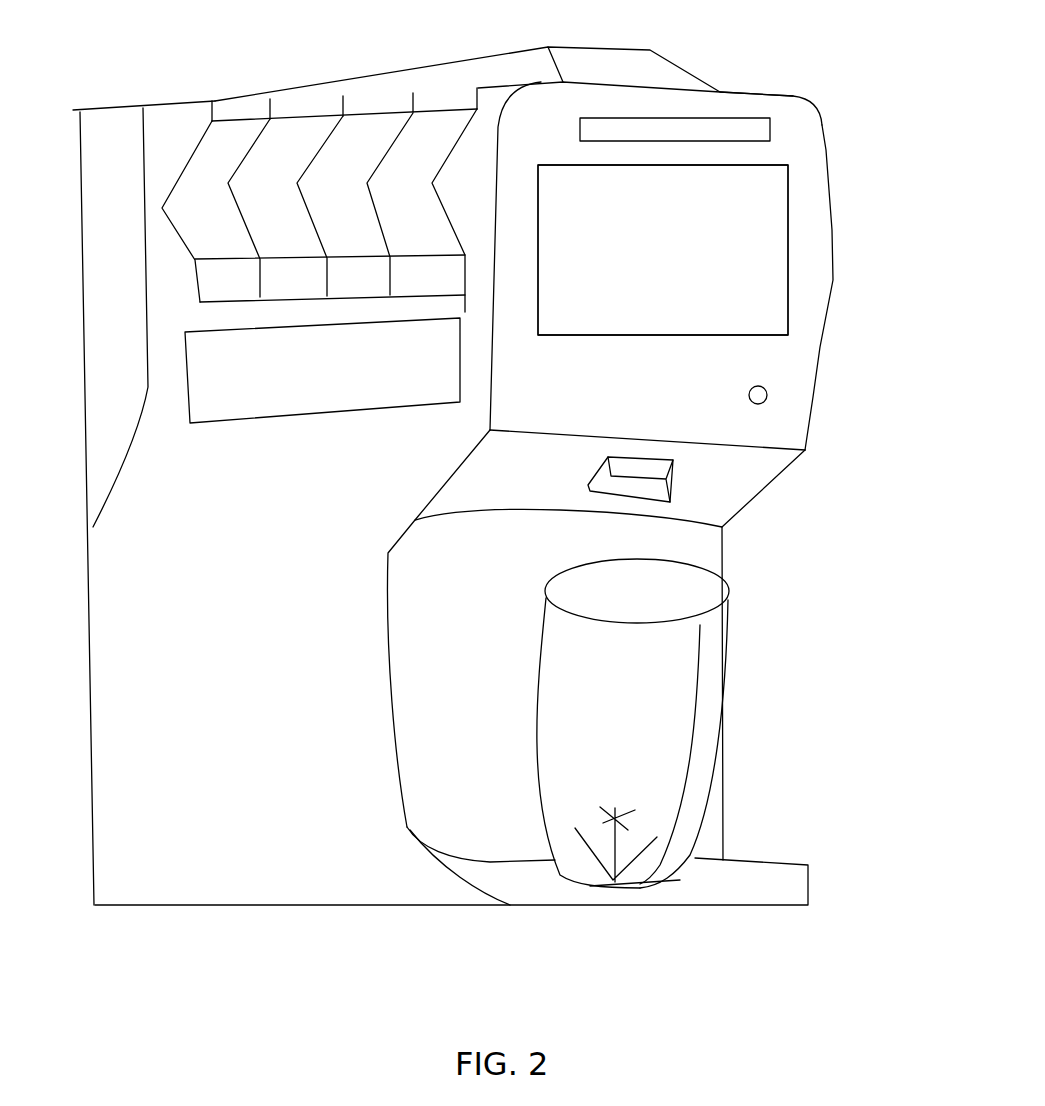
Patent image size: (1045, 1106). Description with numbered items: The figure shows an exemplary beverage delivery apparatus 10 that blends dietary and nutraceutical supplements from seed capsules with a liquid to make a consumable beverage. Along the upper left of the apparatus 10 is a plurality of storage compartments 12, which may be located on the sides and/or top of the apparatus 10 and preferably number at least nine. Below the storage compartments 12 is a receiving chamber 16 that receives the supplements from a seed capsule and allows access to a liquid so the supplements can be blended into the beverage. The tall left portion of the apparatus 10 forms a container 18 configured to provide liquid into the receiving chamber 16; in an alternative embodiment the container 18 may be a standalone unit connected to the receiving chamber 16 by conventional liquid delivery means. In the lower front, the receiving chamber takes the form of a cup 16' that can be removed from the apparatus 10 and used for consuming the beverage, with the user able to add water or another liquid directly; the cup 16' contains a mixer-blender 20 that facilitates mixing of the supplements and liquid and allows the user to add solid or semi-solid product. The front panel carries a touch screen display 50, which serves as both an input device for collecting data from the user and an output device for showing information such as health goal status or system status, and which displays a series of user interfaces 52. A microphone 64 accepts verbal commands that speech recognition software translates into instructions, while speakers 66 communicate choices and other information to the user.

The beverage delivery apparatus 10 is at (713, 72).
The storage compartments 12 is at (443, 123).
The receiving chamber 16 is at (245, 481).
The cup 16' is at (693, 723).
The container 18 is at (113, 277).
The mixer-blender 20 is at (647, 825).
The touch screen display 50 is at (790, 292).
The user interfaces 52 is at (755, 245).
The microphone 64 is at (767, 393).
The speakers 66 is at (757, 133).